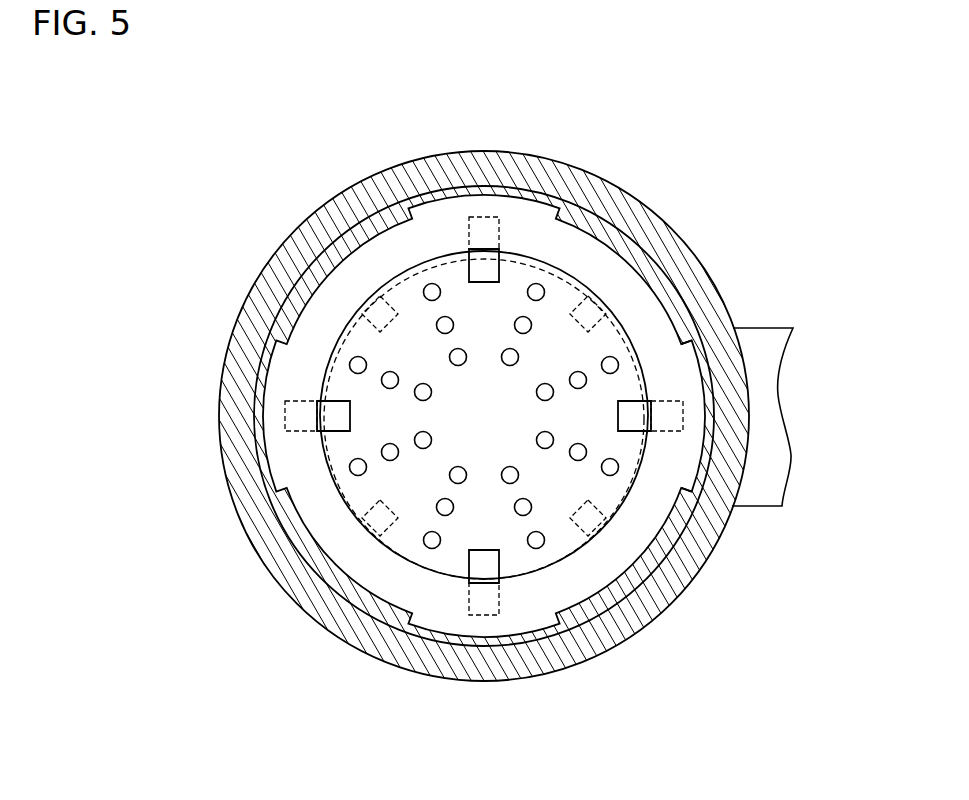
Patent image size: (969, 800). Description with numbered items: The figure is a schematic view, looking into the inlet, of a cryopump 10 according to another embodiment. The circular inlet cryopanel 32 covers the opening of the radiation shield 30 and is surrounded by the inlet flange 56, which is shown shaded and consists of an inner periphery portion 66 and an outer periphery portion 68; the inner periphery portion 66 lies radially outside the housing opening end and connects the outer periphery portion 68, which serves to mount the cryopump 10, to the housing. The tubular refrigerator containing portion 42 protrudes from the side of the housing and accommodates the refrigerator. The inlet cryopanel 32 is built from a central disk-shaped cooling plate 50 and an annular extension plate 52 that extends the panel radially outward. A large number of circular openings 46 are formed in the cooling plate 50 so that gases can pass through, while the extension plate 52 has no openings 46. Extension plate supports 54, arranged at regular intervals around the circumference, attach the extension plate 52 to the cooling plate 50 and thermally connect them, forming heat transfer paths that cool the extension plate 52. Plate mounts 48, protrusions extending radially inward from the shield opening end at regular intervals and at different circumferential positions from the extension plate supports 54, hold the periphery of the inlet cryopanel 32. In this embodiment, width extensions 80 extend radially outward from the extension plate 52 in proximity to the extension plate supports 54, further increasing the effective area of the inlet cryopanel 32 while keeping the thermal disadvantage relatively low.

The cryopump 10 is at (152, 186).
The radiation shield 30 is at (518, 578).
The inlet cryopanel 32 is at (692, 100).
The refrigerator containing portion 42 is at (766, 326).
The openings 46 is at (534, 393).
The plate mounts 48 is at (600, 518).
The cooling plate 50 is at (517, 272).
The extension plate 52 is at (598, 272).
The extension plate supports 54 is at (483, 263).
The inlet flange 56 is at (772, 597).
The inner periphery portion 66 is at (595, 602).
The outer periphery portion 68 is at (663, 585).
The width extensions 80 is at (690, 346).